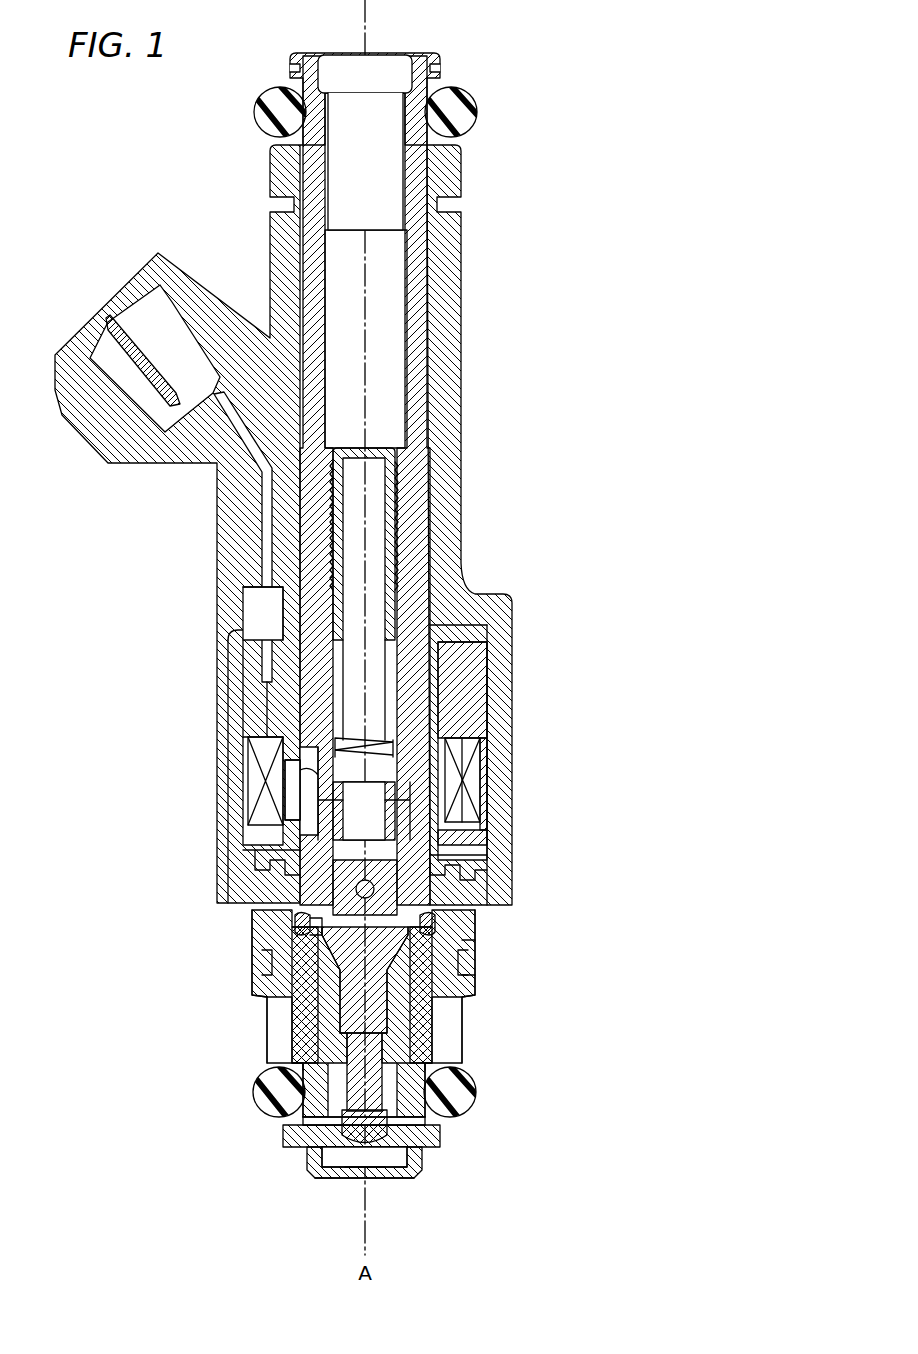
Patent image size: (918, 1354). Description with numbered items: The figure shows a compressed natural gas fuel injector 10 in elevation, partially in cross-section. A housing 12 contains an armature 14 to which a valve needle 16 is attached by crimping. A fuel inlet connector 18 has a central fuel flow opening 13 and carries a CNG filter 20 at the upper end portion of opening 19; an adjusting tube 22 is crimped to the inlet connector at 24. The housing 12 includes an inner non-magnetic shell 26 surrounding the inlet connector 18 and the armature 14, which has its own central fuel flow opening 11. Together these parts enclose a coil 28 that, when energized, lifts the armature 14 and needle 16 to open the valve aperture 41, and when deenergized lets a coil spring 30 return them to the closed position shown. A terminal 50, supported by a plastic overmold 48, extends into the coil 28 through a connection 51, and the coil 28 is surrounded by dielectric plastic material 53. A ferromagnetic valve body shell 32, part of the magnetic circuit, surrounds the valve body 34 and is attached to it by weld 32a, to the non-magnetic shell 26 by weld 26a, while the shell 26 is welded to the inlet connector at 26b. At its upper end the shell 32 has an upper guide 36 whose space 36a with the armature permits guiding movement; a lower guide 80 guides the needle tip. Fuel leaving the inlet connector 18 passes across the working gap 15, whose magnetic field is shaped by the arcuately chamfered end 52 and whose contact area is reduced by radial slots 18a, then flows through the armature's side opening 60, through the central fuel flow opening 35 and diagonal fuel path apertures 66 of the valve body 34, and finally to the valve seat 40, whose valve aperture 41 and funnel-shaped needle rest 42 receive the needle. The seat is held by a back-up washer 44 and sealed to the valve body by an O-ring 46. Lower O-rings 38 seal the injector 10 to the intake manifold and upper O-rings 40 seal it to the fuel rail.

The injector 10 is at (508, 186).
The central fuel flow opening 11 is at (353, 815).
The housing 12 is at (490, 645).
The central fuel flow opening 13 is at (392, 278).
The armature 14 is at (402, 895).
The working gap 15 is at (445, 790).
The valve needle 16 is at (376, 1084).
The fuel inlet connector 18 is at (426, 305).
The radial slots 18a is at (265, 745).
The opening 19 is at (286, 1072).
The CNG filter 20 is at (382, 66).
The adjusting tube 22 is at (388, 498).
The crimp connection 24 is at (396, 522).
The inner non-magnetic shell 26 is at (450, 778).
The weld 26a is at (438, 812).
The weld 26b is at (436, 733).
The coil 28 is at (462, 745).
The coil spring 30 is at (356, 742).
The valve body shell 32 is at (245, 892).
The weld 32a is at (468, 968).
The valve body 34 is at (436, 982).
The central fuel flow opening 35 is at (396, 1031).
The upper guide 36 is at (276, 936).
The space 36a is at (292, 940).
The lower O-rings 38 is at (452, 1082).
The upper O-rings / valve seat 40 is at (464, 117).
The valve aperture 41 is at (372, 1168).
The needle rest 42 is at (302, 1152).
The back-up washer 44 is at (322, 1180).
The O-ring 46 is at (418, 1162).
The overmold 48 is at (102, 432).
The terminal 50 is at (222, 428).
The connection 51 is at (266, 690).
The arcuately chamfered end 52 is at (300, 770).
The dielectric plastic material 53 is at (252, 682).
The side opening 60 is at (372, 890).
The fuel path apertures 66 is at (442, 948).
The lower guide 80 is at (312, 1122).